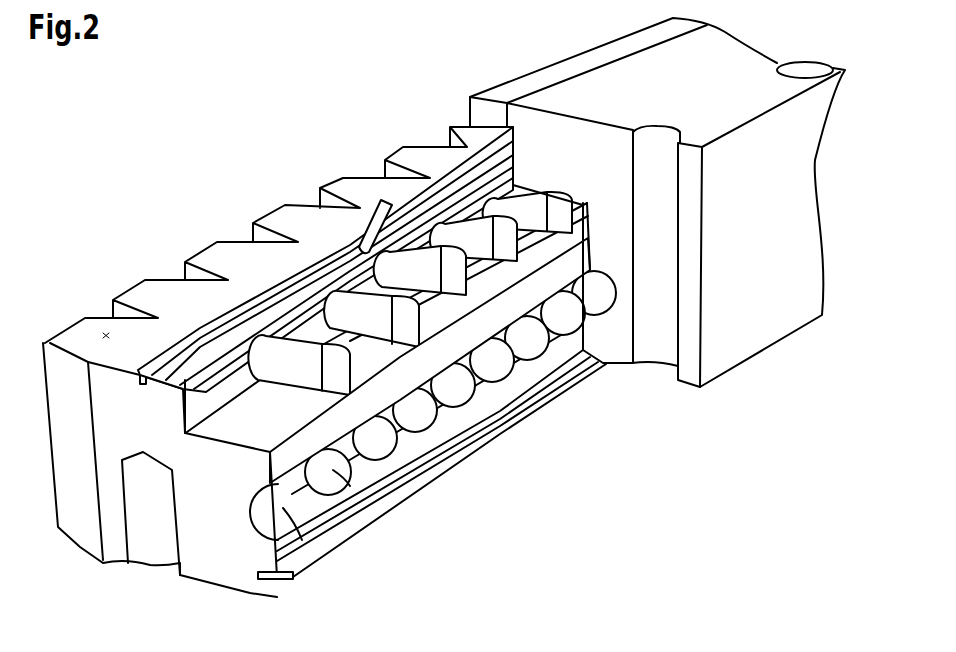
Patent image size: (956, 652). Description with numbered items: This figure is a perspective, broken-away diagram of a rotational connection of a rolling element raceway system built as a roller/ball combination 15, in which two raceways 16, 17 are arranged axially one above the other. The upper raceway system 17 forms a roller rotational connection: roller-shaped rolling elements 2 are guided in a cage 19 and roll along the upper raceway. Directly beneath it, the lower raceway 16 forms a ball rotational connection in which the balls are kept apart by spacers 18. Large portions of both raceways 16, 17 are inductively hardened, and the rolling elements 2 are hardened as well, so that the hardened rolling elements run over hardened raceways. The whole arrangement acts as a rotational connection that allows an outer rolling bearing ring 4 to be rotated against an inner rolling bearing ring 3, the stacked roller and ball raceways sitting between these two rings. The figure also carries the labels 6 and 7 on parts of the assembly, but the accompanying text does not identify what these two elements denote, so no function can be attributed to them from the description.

The rolling elements 2 is at (300, 352).
The inner rolling bearing ring 3 is at (617, 333).
The outer rolling bearing ring 4 is at (110, 537).
The wiper element 6 is at (390, 203).
The retaining strip 7 is at (325, 542).
The roller/ball combination 15 is at (232, 133).
The lower raceway 16 is at (285, 573).
The upper raceway system 17 is at (230, 428).
The spacers 18 is at (476, 380).
The cage 19 is at (522, 263).